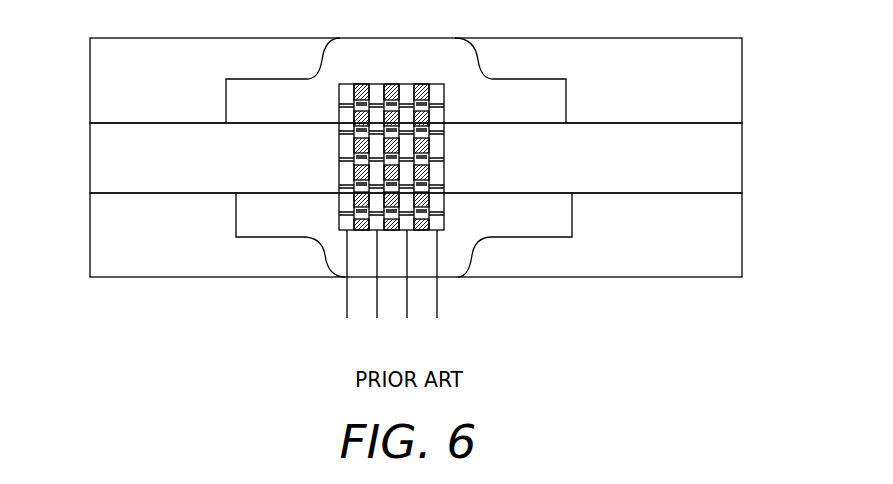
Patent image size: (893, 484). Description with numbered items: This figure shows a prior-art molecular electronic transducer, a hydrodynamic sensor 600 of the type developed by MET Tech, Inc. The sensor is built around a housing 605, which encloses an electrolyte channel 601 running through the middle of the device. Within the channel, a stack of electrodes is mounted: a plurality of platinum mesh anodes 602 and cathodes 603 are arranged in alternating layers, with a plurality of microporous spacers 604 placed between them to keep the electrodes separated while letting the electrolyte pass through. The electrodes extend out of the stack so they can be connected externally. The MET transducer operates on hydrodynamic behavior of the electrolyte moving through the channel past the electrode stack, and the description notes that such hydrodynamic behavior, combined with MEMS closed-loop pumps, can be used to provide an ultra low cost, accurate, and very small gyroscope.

The hydrodynamic sensor 600 is at (391, 181).
The electrolyte channel 601 is at (104, 155).
The platinum mesh anodes 602 is at (357, 232).
The cathodes 603 is at (352, 226).
The microporous spacers 604 is at (396, 83).
The housing 605 is at (350, 37).